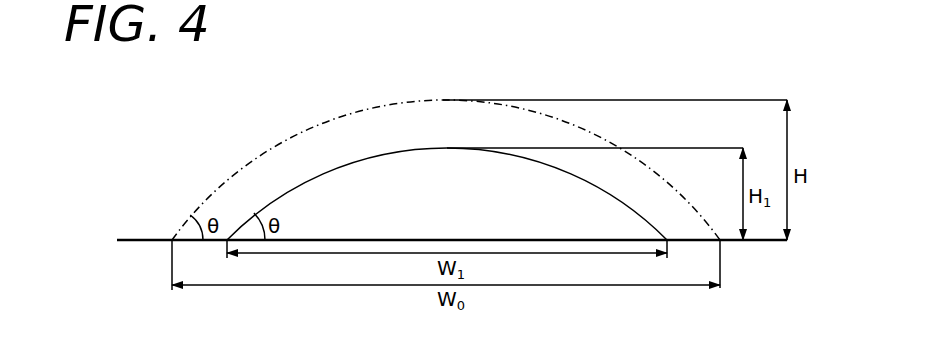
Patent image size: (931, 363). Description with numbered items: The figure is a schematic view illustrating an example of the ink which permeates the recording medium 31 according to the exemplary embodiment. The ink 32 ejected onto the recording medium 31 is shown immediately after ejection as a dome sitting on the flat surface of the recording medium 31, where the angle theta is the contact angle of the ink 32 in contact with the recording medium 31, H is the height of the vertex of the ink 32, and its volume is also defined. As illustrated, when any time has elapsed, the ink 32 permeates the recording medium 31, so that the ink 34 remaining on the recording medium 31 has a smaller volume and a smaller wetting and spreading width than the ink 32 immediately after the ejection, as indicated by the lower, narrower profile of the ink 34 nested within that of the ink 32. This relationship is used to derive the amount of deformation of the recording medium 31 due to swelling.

The recording medium 31 is at (137, 240).
The ink 32 is at (287, 142).
The ink remaining on the recording medium 34 is at (378, 155).